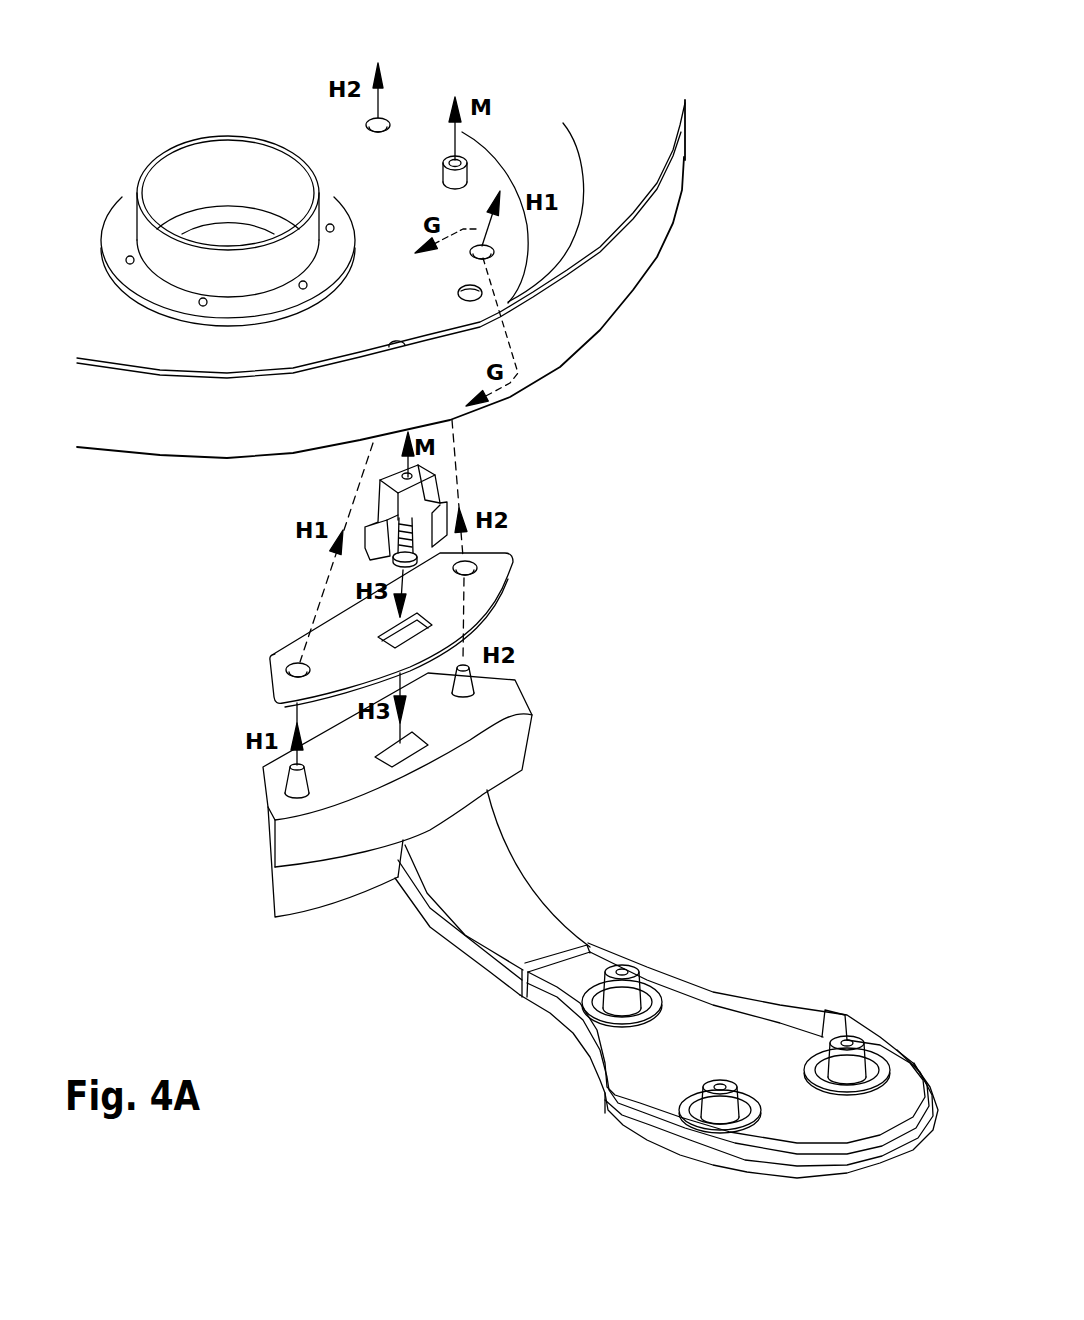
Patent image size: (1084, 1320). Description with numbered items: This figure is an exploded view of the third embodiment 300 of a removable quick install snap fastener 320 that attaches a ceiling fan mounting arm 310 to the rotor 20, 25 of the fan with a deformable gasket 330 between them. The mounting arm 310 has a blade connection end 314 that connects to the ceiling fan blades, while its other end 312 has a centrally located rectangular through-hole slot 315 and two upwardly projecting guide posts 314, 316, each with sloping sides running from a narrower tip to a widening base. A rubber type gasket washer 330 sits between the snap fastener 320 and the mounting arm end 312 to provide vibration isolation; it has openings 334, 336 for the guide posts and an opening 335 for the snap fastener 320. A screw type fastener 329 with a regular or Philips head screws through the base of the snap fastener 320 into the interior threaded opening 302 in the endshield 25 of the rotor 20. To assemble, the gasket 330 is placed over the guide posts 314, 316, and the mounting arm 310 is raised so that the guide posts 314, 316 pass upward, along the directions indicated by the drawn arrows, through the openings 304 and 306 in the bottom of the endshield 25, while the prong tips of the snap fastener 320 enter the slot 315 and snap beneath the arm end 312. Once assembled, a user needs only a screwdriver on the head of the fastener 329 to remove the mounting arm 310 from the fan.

The rotor 20 is at (663, 213).
The endshield 25 is at (393, 200).
The third embodiment 300 is at (785, 427).
The interior threaded opening 302 is at (463, 167).
The opening 304 is at (477, 253).
The opening 306 is at (390, 118).
The mounting arm 310 is at (527, 910).
The mounting arm end 312 is at (520, 770).
The guide post / blade connection end 314 is at (283, 780).
The rectangular through-hole slot 315 is at (430, 745).
The guide post 316 is at (477, 678).
The snap fastener 320 is at (495, 479).
The screw type fastener 329 is at (390, 557).
The gasket washer 330 is at (571, 546).
The opening for guide post 334 is at (290, 670).
The opening of the snap fastener 335 is at (385, 632).
The opening for guide post 336 is at (473, 556).